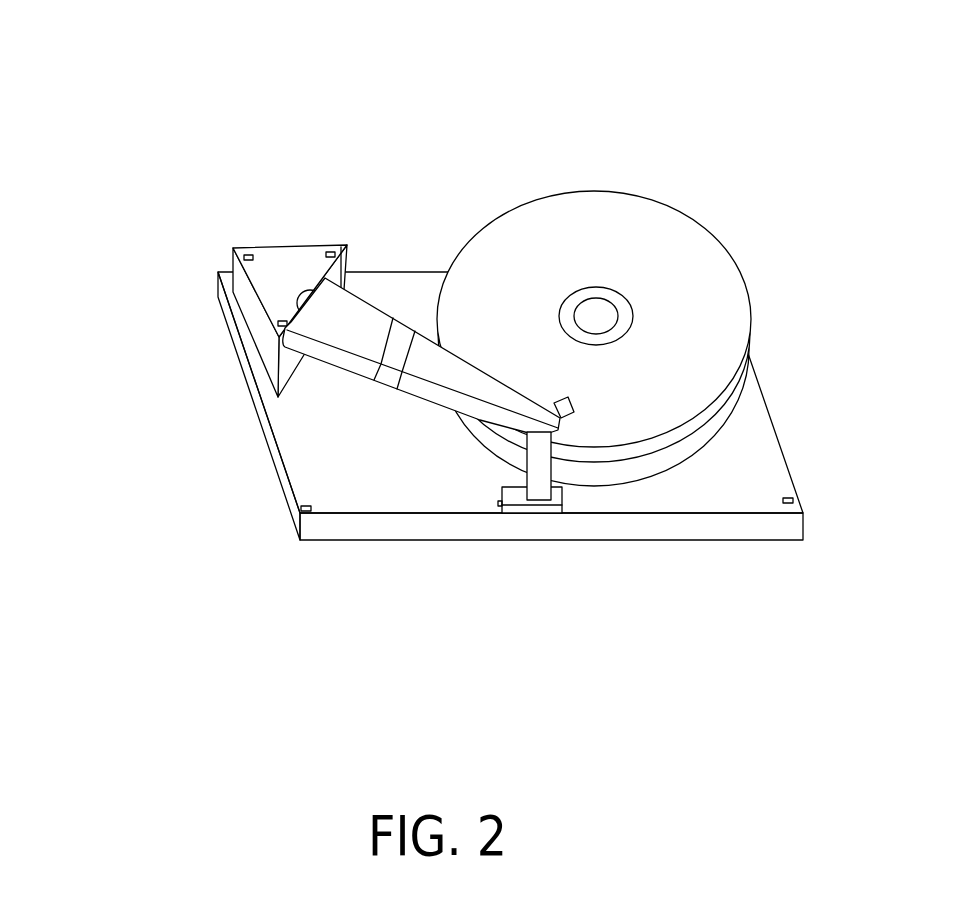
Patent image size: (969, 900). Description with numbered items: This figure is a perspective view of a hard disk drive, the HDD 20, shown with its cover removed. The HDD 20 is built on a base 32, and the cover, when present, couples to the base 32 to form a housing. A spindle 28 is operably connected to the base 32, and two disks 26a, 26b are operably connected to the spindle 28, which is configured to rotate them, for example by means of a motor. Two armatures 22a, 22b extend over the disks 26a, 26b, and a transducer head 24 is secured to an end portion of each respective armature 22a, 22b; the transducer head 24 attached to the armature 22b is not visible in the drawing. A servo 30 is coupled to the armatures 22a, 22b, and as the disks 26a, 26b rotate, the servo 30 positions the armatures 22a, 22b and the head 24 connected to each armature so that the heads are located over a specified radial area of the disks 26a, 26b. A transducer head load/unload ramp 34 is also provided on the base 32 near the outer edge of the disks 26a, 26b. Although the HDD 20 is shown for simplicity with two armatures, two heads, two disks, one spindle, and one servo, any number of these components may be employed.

The hard disk drive 20 is at (98, 84).
The armature 22a is at (426, 352).
The armature 22b is at (428, 400).
The transducer head 24 is at (565, 412).
The disk 26a is at (716, 342).
The disk 26b is at (758, 398).
The spindle 28 is at (615, 298).
The servo 30 is at (270, 247).
The base 32 is at (286, 493).
The transducer head load/unload ramp 34 is at (535, 512).